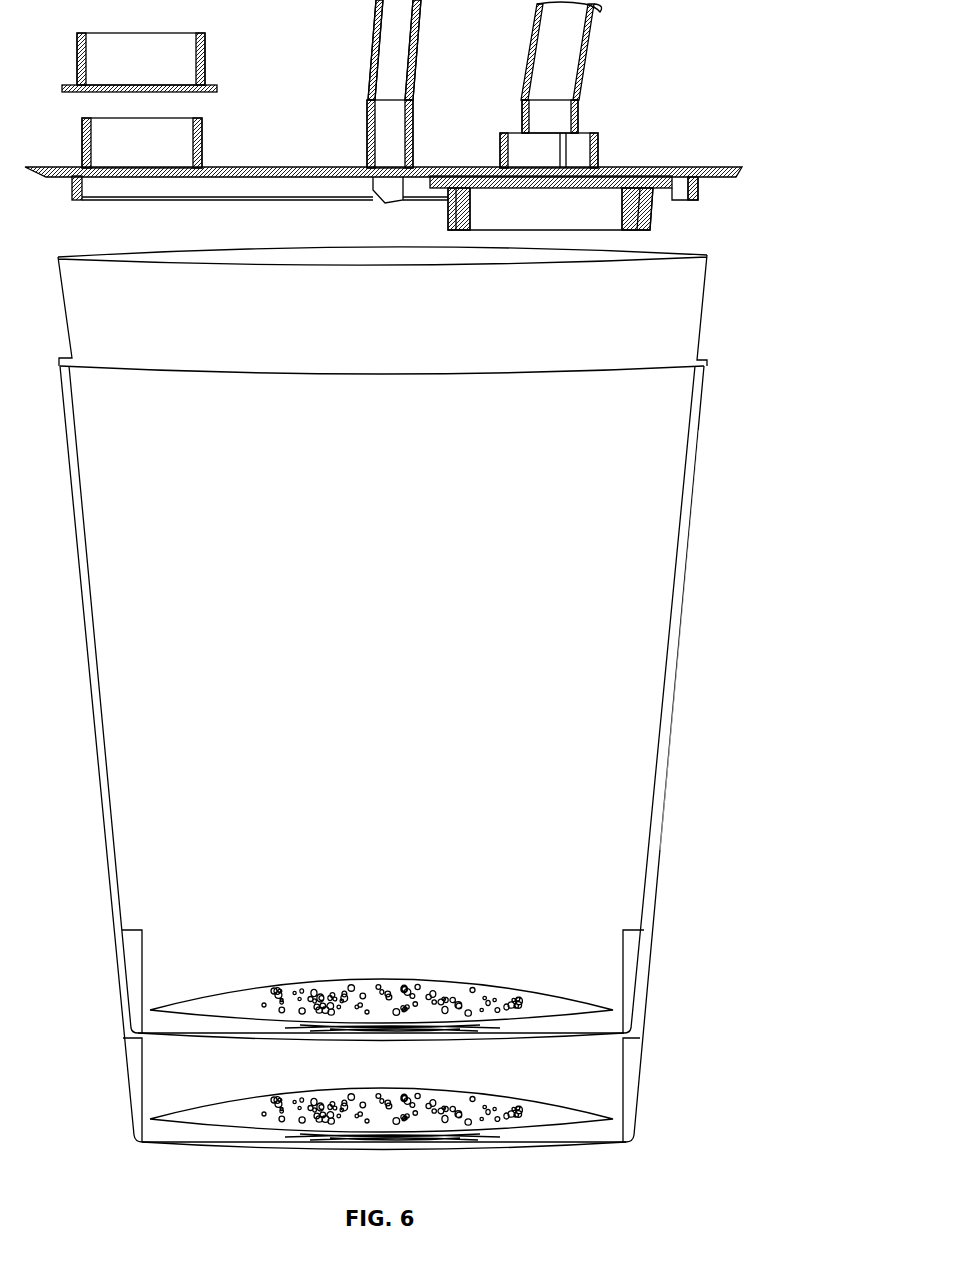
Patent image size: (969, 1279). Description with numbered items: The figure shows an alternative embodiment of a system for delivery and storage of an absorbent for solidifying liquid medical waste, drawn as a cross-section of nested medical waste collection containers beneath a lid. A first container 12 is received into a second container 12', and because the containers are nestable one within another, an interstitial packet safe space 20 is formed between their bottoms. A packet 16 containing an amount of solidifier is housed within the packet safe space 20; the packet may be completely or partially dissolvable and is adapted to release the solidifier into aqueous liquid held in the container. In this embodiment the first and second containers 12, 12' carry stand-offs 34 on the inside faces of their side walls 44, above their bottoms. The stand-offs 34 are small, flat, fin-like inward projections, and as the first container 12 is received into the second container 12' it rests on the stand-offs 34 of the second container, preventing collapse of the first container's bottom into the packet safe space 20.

The container 12 is at (461, 306).
The second container 12' is at (470, 754).
The side wall 44 is at (668, 758).
The packet 16 is at (247, 1000).
The packet safe space 20 is at (115, 1038).
The stand-off 34 is at (630, 983).